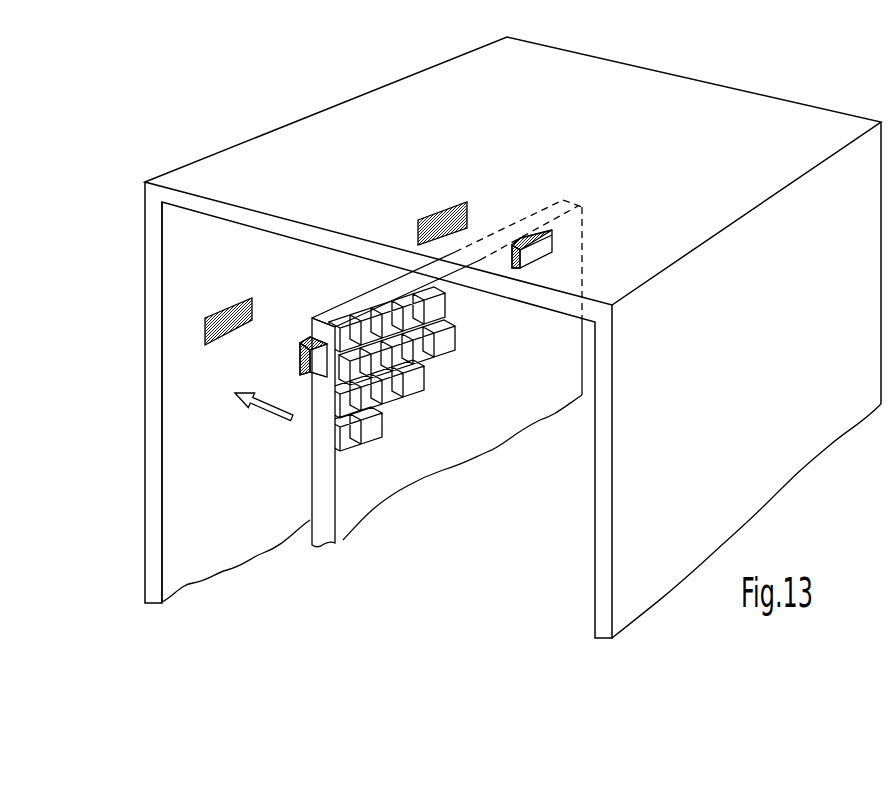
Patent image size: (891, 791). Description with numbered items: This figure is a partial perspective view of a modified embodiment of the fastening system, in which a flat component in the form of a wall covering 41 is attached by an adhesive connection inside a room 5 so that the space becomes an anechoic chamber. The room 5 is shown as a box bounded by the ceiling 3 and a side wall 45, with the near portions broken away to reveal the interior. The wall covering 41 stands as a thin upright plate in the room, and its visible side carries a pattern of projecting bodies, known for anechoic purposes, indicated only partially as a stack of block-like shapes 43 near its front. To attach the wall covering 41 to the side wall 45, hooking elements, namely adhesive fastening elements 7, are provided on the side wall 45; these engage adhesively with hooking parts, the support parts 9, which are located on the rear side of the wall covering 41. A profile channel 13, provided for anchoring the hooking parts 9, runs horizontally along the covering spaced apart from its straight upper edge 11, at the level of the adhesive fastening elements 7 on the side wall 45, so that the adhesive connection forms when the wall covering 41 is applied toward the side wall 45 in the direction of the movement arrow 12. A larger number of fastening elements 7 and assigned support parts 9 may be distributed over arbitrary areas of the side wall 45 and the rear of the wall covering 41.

The ceiling 3 is at (530, 298).
The room 5 is at (510, 478).
The adhesive fastening element 7 is at (232, 305).
The support part 9 is at (303, 355).
The upper edge 11 is at (347, 303).
The movement arrow 12 is at (258, 408).
The profile channel 13 is at (313, 382).
The wall covering 41 is at (322, 480).
The stacked cells 43 is at (436, 378).
The side wall 45 is at (185, 413).